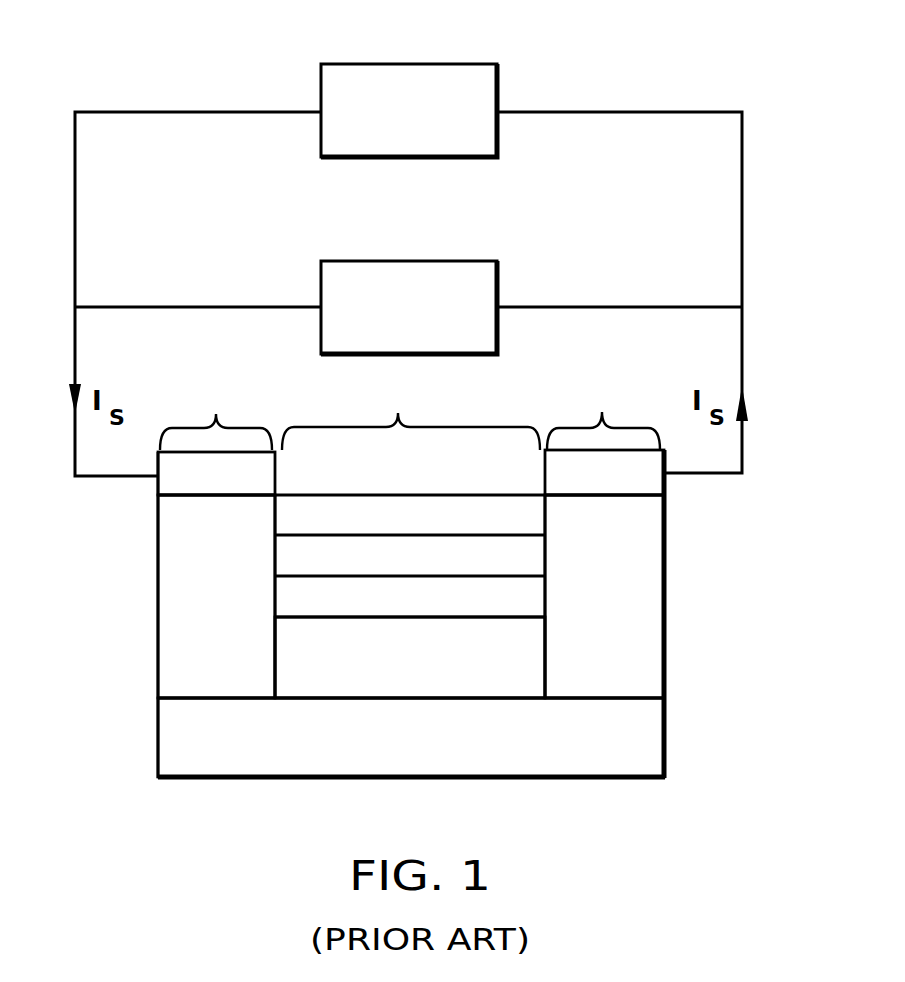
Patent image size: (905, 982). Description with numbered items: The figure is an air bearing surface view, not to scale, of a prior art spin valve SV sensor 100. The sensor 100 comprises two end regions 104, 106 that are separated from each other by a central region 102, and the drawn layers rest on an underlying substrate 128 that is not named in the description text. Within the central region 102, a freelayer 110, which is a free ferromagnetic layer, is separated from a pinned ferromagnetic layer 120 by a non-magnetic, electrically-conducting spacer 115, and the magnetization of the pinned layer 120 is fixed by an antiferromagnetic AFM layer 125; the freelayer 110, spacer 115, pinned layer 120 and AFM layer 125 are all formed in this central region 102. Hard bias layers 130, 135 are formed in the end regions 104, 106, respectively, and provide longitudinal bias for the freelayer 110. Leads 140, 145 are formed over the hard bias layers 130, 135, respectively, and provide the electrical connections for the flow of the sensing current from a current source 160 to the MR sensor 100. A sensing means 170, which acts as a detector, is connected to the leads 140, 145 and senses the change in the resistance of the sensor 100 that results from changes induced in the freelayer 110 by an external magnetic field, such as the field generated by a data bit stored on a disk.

The SV sensor 100 is at (197, 812).
The central region 102 is at (296, 575).
The end region 104 is at (216, 413).
The end region 106 is at (603, 411).
The freelayer 110 is at (313, 685).
The spacer 115 is at (292, 601).
The pinned layer 120 is at (295, 560).
The antiferromagnetic (AFM) layer 125 is at (316, 519).
The substrate 128 is at (623, 745).
The hard bias layer 130 is at (190, 672).
The hard bias layer 135 is at (615, 668).
The lead 140 is at (167, 490).
The lead 145 is at (647, 485).
The current source 160 is at (499, 283).
The sensing means 170 is at (499, 86).